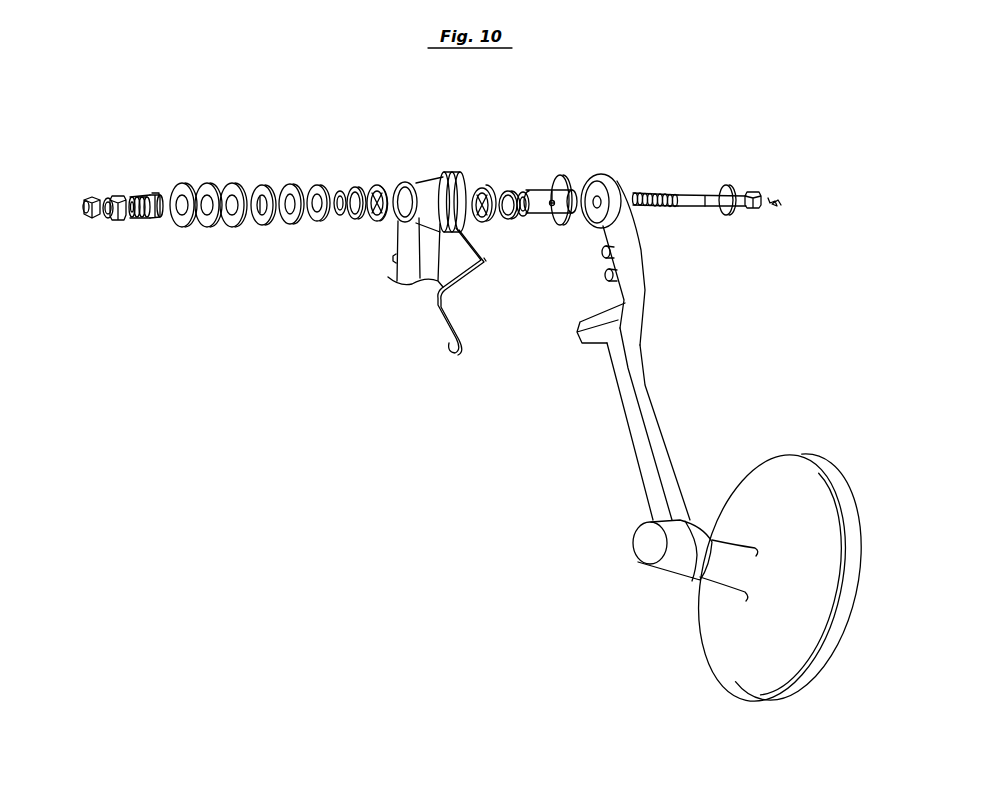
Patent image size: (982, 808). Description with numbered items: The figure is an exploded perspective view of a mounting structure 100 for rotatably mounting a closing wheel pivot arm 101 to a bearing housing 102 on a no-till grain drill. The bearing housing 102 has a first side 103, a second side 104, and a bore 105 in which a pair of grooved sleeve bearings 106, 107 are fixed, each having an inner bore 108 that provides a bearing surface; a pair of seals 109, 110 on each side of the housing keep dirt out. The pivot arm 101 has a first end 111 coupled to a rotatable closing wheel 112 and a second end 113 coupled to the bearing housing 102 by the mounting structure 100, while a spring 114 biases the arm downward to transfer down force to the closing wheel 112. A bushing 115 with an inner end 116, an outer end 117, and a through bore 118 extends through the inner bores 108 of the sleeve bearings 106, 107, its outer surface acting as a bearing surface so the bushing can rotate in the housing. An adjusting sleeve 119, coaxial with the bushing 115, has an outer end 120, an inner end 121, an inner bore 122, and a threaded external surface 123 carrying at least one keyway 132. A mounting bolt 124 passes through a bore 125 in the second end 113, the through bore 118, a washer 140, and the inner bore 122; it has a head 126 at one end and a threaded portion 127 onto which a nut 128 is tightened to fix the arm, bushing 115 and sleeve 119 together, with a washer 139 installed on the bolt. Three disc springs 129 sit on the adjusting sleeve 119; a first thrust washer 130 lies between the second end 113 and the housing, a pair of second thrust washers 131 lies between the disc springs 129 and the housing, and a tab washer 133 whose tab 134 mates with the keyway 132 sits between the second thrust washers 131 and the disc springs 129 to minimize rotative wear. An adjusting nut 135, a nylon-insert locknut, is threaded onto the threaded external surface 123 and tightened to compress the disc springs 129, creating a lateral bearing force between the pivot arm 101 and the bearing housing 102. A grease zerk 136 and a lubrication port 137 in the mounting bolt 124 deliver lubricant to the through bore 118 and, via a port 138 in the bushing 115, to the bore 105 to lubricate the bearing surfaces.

The mounting structure 100 is at (426, 386).
The closing wheel pivot arm 101 is at (626, 407).
The bearing housing 102 is at (425, 176).
The first side 103 is at (455, 173).
The second side 104 is at (397, 240).
The bore 105 is at (401, 181).
The grooved sleeve bearing 106 is at (484, 187).
The grooved sleeve bearing 107 is at (378, 186).
The inner bore 108 is at (376, 221).
The seal 109 is at (508, 224).
The seal 110 is at (355, 186).
The first end 111 is at (672, 565).
The closing wheel 112 is at (730, 667).
The second end 113 is at (618, 178).
The spring 114 is at (463, 280).
The bushing 115 is at (540, 194).
The inner end 116 is at (583, 189).
The outer end 117 is at (509, 190).
The through bore 118 is at (524, 217).
The adjusting sleeve 119 is at (137, 194).
The outer end 120 is at (132, 219).
The inner end 121 is at (161, 219).
The inner bore 122 is at (123, 197).
The threaded external surface 123 is at (142, 219).
The mounting bolt 124 is at (693, 194).
The bore 125 is at (601, 206).
The head 126 is at (753, 191).
The threaded portion 127 is at (656, 192).
The nut 128 is at (86, 196).
The disc spring 129 is at (233, 225).
The first thrust washer 130 is at (561, 177).
The second thrust washer 131 is at (317, 185).
The keyway 132 is at (157, 192).
The tab washer 133 is at (262, 184).
The tab 134 is at (263, 223).
The adjusting nut 135 is at (109, 218).
The grease zerk 136 is at (775, 207).
The lubrication port 137 is at (708, 200).
The port 138 is at (554, 208).
The washer 139 is at (728, 216).
The washer 140 is at (340, 216).